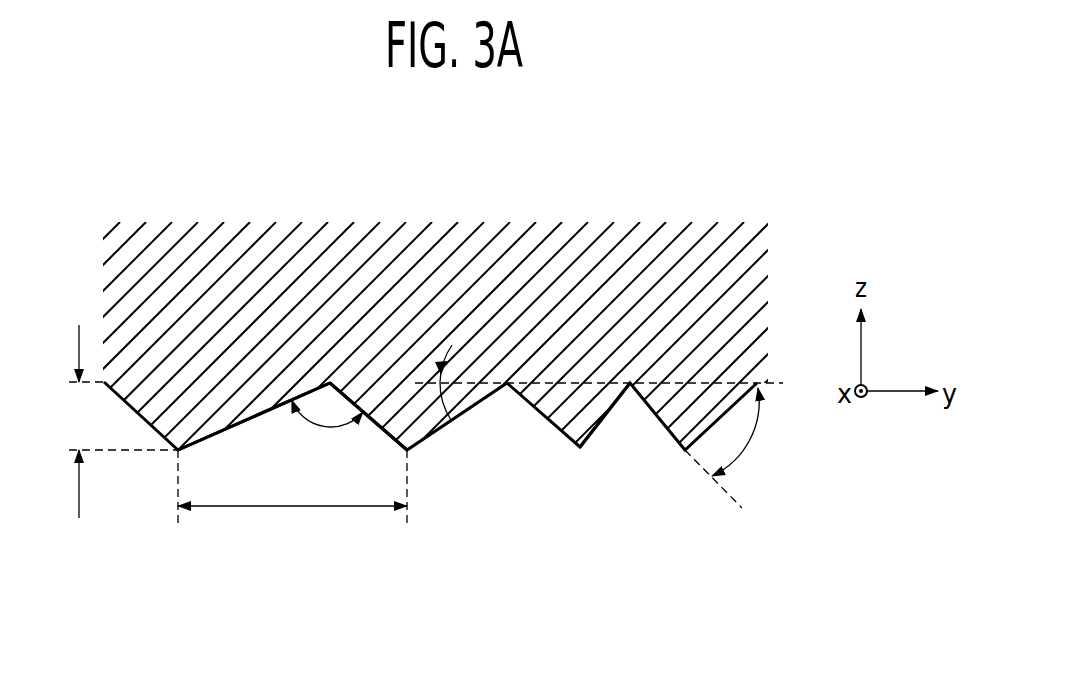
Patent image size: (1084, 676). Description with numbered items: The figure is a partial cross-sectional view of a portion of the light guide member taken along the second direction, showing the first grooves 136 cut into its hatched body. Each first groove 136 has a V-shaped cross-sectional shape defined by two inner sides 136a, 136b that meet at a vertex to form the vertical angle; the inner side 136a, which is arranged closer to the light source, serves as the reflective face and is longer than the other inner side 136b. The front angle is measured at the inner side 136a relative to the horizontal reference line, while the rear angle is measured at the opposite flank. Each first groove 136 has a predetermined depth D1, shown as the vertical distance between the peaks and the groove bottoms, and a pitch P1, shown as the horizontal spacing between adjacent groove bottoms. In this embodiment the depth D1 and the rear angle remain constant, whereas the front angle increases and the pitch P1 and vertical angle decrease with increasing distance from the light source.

The first groove 136 is at (613, 423).
The inner side 136a is at (231, 428).
The inner side 136b is at (363, 416).
The depth D1 is at (113, 421).
The pitch P1 is at (292, 497).